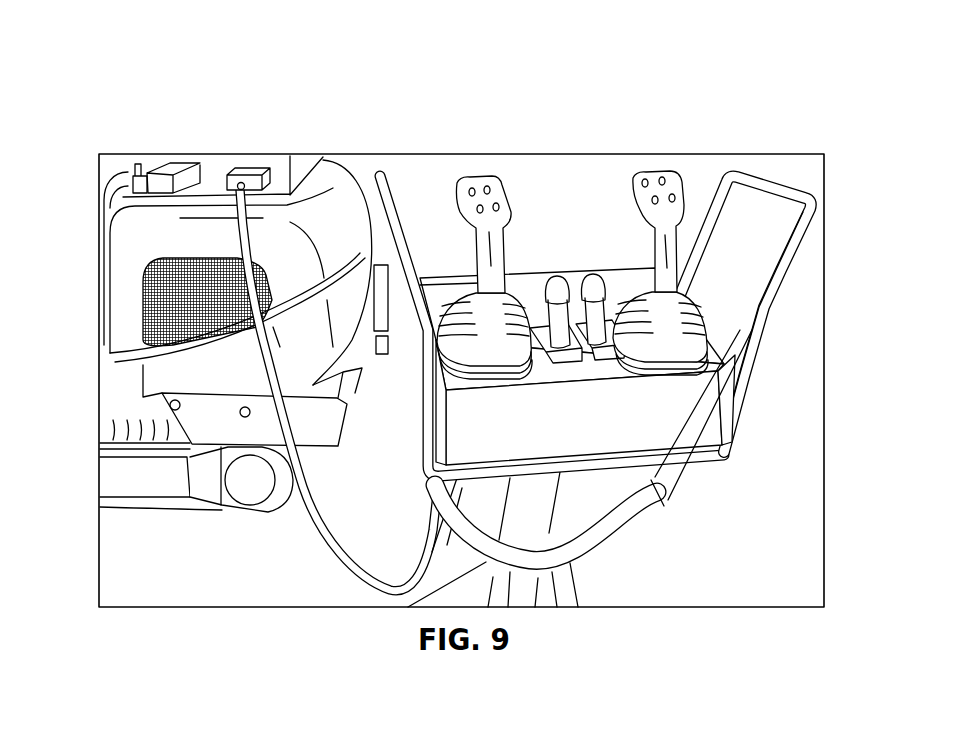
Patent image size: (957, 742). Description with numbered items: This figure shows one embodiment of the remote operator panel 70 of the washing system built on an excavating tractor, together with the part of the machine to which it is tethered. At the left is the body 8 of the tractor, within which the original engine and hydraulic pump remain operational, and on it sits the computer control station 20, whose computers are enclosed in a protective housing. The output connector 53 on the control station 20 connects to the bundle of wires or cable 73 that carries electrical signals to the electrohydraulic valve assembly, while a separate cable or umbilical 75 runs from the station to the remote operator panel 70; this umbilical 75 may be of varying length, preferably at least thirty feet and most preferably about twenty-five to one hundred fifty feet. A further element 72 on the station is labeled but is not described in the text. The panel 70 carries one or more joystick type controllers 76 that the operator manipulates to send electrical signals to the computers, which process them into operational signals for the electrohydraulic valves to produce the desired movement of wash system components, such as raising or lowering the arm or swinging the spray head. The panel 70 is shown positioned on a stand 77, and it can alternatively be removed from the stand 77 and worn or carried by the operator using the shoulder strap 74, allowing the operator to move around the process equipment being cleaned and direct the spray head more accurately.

The body 8 is at (162, 310).
The computer control station 20 is at (218, 167).
The output connector 53 is at (160, 177).
The remote operator panel 70 is at (765, 390).
The cable connector 72 is at (255, 175).
The cable 73 is at (105, 195).
The shoulder strap 74 is at (592, 537).
The cable or umbilical 75 is at (265, 388).
The joystick type controllers 76 is at (558, 270).
The stand 77 is at (535, 583).